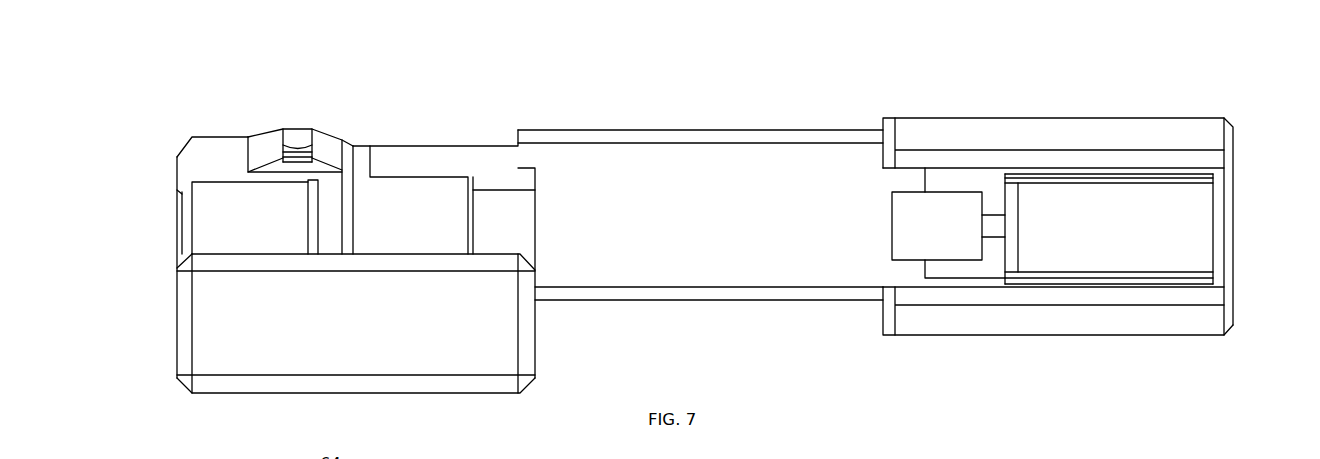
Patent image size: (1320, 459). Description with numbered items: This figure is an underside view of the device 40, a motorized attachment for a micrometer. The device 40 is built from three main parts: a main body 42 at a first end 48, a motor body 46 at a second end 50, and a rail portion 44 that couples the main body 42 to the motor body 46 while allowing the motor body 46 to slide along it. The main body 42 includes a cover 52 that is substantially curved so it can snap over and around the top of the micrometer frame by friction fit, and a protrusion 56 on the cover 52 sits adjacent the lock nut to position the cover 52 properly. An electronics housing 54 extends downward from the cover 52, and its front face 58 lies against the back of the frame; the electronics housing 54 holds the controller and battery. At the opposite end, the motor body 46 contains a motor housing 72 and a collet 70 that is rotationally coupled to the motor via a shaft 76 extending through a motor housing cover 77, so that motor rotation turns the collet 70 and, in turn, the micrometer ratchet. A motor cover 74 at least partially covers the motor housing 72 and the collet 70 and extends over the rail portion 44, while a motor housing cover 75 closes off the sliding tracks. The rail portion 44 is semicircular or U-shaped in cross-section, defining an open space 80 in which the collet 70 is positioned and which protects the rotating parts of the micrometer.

The device 40 is at (222, 70).
The main body 42 is at (338, 85).
The rail portion 44 is at (692, 85).
The motor body 46 is at (983, 68).
The first end 48 is at (170, 150).
The second end 50 is at (1276, 160).
The cover 52 is at (412, 160).
The electronics housing 54 is at (493, 368).
The protrusion 56 is at (312, 142).
The front face 58 is at (233, 252).
The collet 70 is at (910, 240).
The motor housing 72 is at (1112, 203).
The motor cover 74 is at (1133, 323).
The motor housing cover 75 is at (890, 325).
The shaft 76 is at (990, 216).
The motor housing cover 77 is at (1012, 260).
The open space 80 is at (672, 188).